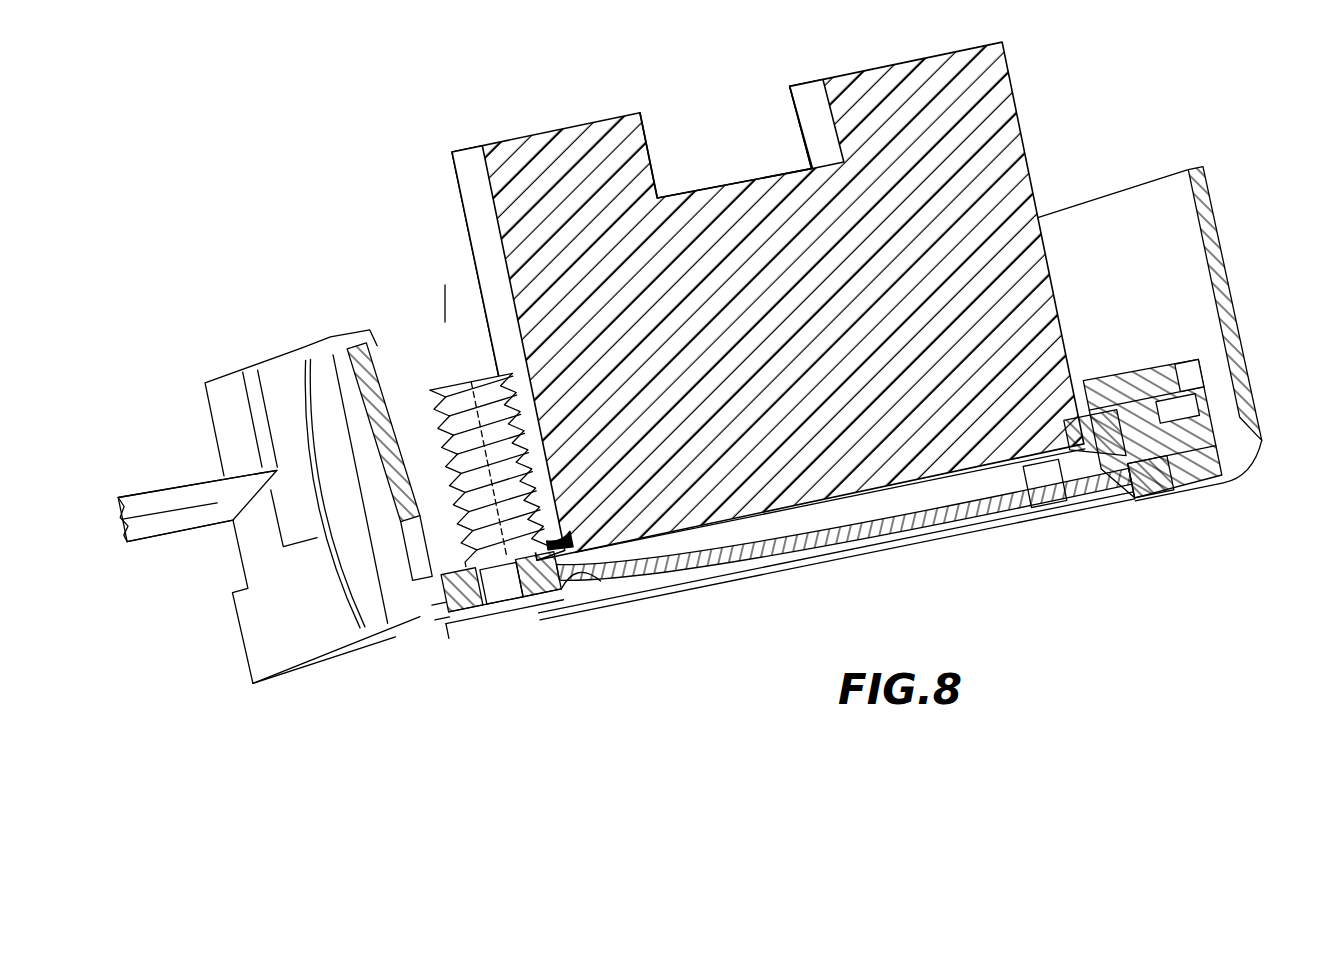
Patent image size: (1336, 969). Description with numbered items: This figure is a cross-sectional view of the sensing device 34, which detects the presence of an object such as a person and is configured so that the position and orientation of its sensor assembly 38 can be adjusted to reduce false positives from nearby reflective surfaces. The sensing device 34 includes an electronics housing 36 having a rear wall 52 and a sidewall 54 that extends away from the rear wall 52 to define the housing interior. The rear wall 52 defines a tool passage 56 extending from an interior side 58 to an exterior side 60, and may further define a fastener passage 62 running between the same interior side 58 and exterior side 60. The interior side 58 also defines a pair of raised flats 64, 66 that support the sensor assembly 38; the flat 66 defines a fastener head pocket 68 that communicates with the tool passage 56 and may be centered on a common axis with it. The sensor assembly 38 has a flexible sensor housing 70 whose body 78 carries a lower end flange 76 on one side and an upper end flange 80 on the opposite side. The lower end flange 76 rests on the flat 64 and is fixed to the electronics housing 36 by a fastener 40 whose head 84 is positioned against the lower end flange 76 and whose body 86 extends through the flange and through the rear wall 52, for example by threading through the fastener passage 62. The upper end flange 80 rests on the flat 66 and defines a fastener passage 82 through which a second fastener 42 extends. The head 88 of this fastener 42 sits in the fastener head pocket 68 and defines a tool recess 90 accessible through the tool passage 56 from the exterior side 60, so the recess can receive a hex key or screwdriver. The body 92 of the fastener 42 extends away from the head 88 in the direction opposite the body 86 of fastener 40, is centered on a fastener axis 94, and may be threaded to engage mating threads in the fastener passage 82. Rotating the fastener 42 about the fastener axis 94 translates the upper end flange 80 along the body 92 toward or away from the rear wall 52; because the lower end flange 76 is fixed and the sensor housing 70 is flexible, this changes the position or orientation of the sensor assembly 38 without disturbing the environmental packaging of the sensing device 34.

The sensing device 34 is at (408, 270).
The electronics housing 36 is at (1236, 190).
The sensor assembly 38 is at (733, 142).
The fastener 40 is at (1180, 440).
The fastener 42 is at (570, 585).
The rear wall 52 is at (860, 545).
The sidewall 54 is at (1222, 290).
The tool passage 56 is at (520, 600).
The interior side 58 is at (773, 540).
The exterior side 60 is at (727, 573).
The fastener passage 62 is at (1180, 460).
The raised flat 64 is at (1097, 472).
The raised flat 66 is at (593, 570).
The fastener head pocket 68 is at (463, 625).
The sensor housing 70 is at (1003, 90).
The lower end flange 76 is at (1185, 410).
The body 78 is at (1023, 432).
The upper end flange 80 is at (440, 610).
The fastener passage 82 is at (537, 553).
The head 84 is at (1207, 375).
The body 86 is at (1170, 495).
The head 88 is at (460, 615).
The tool recess 90 is at (503, 625).
The body 92 is at (507, 442).
The fastener axis 94 is at (445, 316).